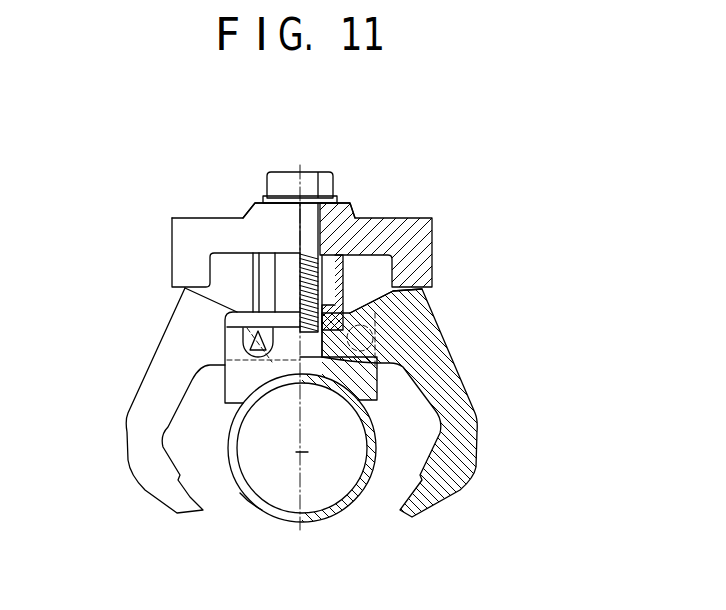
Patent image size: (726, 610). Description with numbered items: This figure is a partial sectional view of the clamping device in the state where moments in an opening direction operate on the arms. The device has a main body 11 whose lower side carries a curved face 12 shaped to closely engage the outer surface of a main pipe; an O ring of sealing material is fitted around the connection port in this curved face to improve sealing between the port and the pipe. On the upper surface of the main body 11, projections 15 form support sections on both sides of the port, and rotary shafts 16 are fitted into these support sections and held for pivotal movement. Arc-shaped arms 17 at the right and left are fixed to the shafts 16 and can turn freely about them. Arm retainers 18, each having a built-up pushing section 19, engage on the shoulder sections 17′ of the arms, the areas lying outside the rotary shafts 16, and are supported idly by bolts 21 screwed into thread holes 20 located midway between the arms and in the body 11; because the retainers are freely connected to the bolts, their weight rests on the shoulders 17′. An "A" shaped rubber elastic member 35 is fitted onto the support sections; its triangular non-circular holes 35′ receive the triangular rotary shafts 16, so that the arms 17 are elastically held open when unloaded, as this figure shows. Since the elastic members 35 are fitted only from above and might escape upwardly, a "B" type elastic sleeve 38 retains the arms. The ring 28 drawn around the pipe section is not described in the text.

The main body 11 is at (381, 386).
The curved face 12 is at (340, 397).
The projections 15 is at (222, 405).
The rotary shafts 16 is at (243, 346).
The arc-shaped arms 17 is at (142, 450).
The shoulder sections 17′ is at (218, 258).
The arm retainers 18 is at (427, 215).
The pushing sections 19 is at (187, 275).
The thread holes 20 is at (343, 308).
The bolts 21 is at (307, 185).
The tube wall 28 is at (262, 510).
The elastic member 35 is at (240, 328).
The non-circular holes 35′ is at (235, 388).
The elastic member or sleeve 38 is at (427, 215).